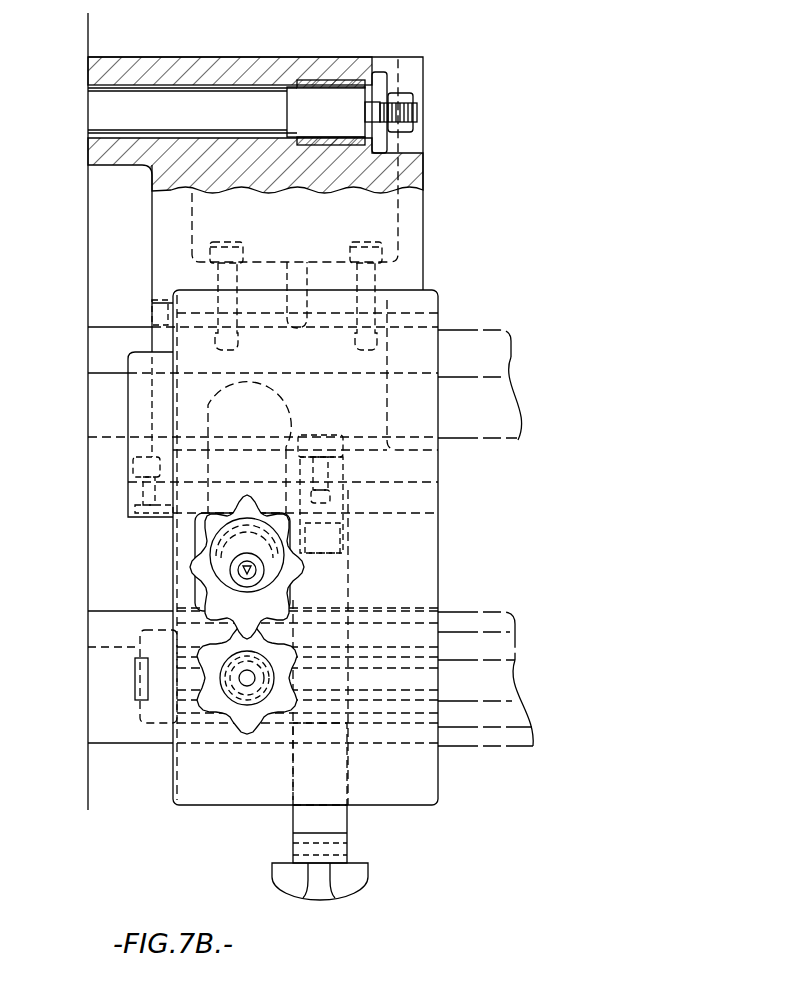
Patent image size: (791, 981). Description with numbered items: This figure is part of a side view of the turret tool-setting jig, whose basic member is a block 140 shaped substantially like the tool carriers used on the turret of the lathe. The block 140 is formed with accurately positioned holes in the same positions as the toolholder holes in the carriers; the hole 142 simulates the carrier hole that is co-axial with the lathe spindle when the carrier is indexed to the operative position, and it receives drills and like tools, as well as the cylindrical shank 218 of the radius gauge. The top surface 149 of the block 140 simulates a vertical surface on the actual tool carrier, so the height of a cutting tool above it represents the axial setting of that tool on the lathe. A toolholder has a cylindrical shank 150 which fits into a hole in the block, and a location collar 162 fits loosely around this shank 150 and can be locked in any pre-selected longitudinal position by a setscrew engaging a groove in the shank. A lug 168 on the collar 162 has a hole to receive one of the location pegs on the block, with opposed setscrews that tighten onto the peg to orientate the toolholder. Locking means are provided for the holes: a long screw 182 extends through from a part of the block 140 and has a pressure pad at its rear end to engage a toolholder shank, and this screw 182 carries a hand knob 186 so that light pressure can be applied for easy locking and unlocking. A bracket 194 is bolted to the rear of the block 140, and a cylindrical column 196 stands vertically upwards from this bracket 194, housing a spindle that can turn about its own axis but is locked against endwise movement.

The cylindrical column 196 is at (244, 64).
The bracket 194 is at (160, 232).
The cylindrical shank 150 is at (103, 383).
The location collar 162 is at (135, 407).
The lug 168 is at (135, 517).
The cylindrical shank 218 is at (126, 600).
The top surface 149 is at (186, 558).
The hole 142 is at (190, 748).
The block 140 is at (197, 808).
The long screw 182 is at (343, 828).
The hand knob 186 is at (283, 877).